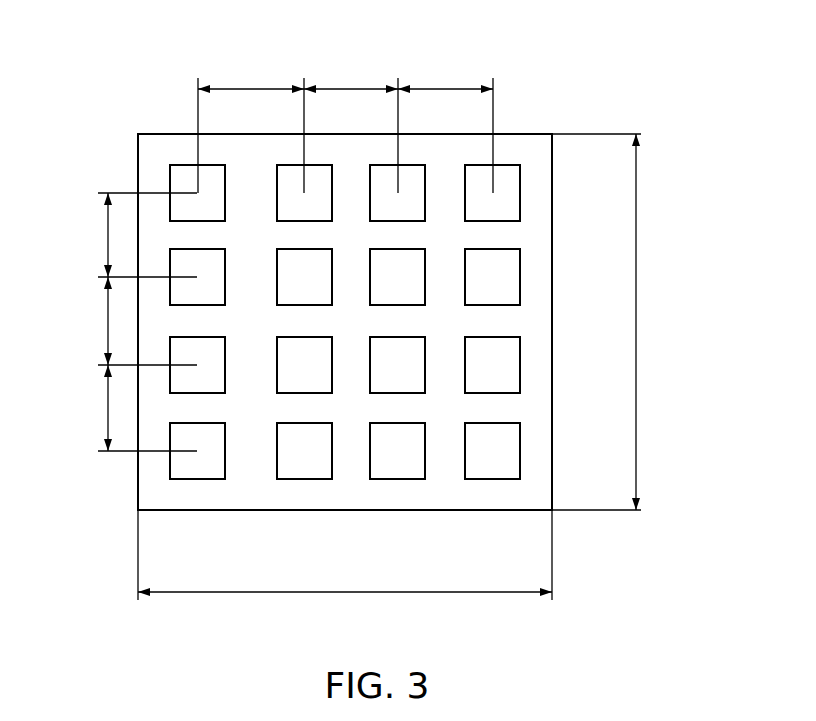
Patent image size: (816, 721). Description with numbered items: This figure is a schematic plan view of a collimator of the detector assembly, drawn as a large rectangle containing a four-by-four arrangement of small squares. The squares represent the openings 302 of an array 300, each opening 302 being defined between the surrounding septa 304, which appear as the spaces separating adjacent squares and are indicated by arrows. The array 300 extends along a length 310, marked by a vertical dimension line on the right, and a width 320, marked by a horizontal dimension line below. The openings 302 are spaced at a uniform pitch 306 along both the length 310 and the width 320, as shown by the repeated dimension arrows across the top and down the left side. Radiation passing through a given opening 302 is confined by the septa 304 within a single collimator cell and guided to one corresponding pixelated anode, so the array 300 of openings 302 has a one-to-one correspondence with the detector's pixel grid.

The array 300 is at (578, 48).
The openings 302 is at (496, 196).
The septa 304 is at (343, 198).
The pitch 306 is at (237, 88).
The length 310 is at (636, 300).
The width 320 is at (341, 594).